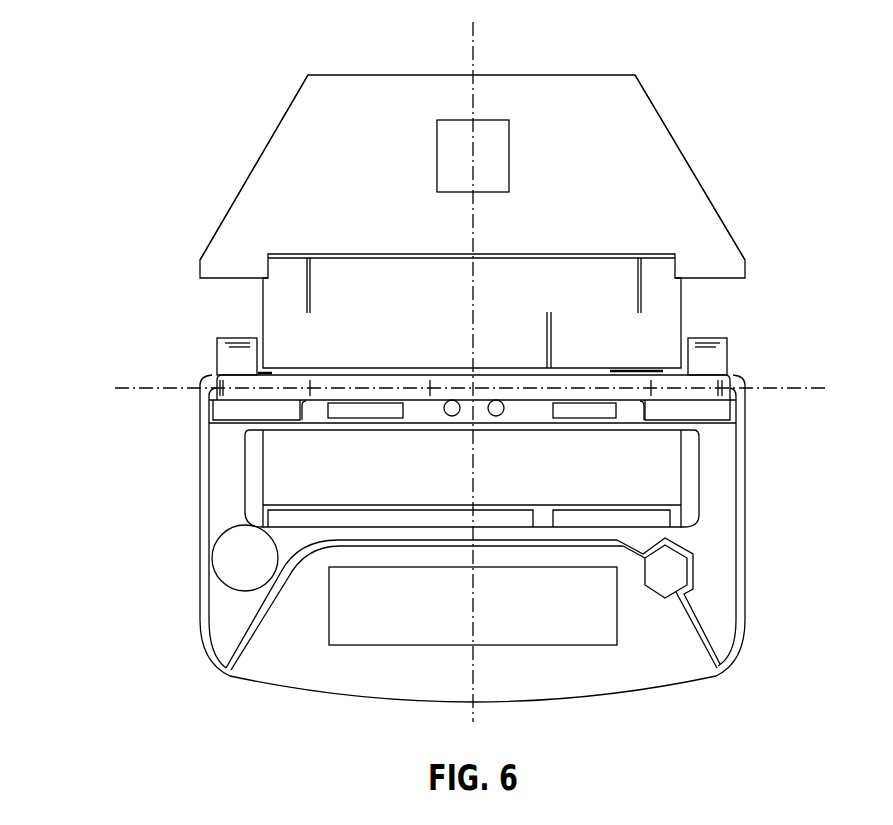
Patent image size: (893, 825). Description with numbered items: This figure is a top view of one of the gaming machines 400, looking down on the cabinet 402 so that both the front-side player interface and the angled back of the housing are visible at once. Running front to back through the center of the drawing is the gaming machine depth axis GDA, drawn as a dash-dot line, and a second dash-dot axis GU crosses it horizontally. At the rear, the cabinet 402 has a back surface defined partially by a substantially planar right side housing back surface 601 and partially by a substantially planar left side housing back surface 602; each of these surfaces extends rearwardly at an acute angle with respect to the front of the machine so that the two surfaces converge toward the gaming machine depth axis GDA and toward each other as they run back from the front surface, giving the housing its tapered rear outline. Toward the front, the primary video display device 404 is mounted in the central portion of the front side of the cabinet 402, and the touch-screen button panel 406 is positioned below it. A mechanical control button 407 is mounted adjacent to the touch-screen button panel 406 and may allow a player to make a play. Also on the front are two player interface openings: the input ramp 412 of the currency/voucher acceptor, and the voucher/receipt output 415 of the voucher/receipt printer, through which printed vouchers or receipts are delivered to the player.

The gaming machine 400 is at (135, 303).
The cabinet 402 is at (770, 188).
The primary video display device 404 is at (693, 385).
The touch-screen button panel 406 is at (378, 617).
The mechanical control button 407 is at (676, 577).
The input ramp 412 is at (597, 415).
The voucher/receipt output 415 is at (362, 410).
The right side housing back surface 601 is at (682, 152).
The left side housing back surface 602 is at (263, 148).
The gaming machine depth axis GDA is at (470, 52).
The gaming unit axis GU is at (795, 388).